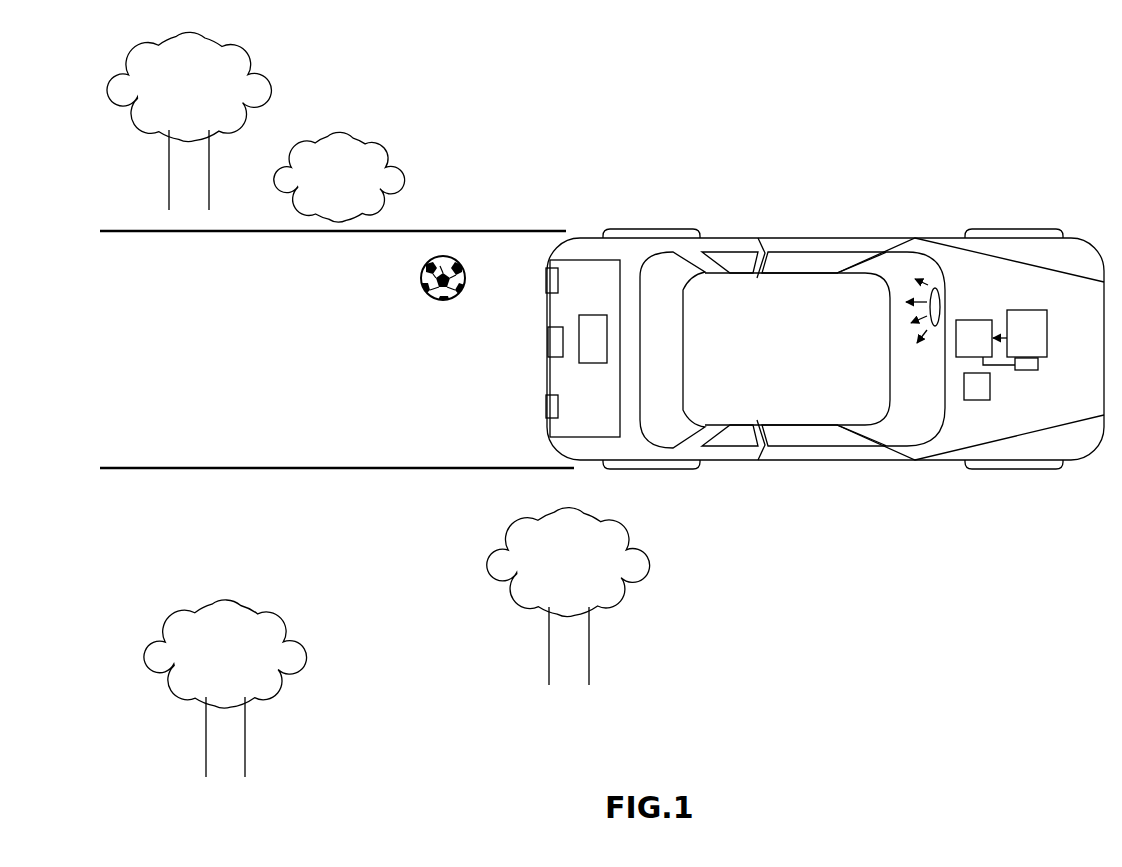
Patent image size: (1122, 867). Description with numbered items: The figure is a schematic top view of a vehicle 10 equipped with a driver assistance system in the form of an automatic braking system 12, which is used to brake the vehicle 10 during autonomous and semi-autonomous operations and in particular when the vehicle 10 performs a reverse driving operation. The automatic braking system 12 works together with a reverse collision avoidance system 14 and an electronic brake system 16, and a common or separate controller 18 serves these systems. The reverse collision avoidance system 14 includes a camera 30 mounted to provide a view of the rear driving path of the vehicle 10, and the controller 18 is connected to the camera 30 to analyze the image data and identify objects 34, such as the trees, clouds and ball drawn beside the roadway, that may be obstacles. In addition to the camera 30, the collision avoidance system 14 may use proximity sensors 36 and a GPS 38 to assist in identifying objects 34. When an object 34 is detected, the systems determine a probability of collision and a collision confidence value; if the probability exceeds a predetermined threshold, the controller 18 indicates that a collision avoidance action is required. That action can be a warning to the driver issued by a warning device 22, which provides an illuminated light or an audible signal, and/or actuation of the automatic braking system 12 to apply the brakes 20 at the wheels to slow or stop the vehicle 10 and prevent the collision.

The vehicle 10 is at (739, 184).
The automatic braking system 12 is at (1028, 364).
The reverse collision avoidance system 14 is at (591, 328).
The electronic brake system 16 is at (1037, 335).
The controller 18 is at (978, 332).
The brakes 20 is at (660, 236).
The warning device 22 is at (935, 327).
The camera 30 is at (553, 342).
The object 34 is at (228, 118).
The proximity sensors 36 is at (546, 280).
The GPS 38 is at (982, 390).